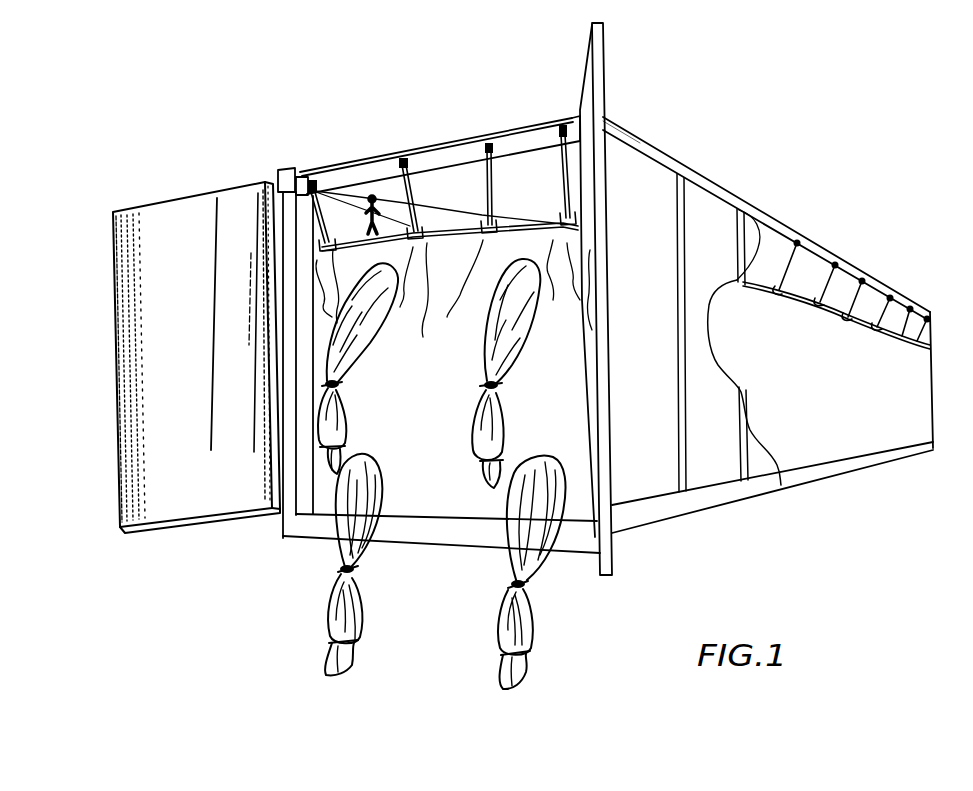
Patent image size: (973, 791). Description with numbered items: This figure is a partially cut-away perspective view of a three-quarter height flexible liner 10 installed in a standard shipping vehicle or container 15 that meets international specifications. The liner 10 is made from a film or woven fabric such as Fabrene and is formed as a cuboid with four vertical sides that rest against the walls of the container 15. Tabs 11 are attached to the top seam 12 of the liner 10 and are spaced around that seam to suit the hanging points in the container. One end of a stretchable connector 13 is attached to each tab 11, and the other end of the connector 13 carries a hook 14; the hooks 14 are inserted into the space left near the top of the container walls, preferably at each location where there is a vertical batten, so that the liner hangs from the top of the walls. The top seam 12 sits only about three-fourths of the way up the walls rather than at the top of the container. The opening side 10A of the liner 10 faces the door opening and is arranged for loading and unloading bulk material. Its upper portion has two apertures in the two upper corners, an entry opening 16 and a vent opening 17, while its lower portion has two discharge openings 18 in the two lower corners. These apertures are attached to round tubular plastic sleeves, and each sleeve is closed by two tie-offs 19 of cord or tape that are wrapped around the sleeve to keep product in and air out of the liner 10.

The flexible liner 10 is at (867, 435).
The opening side 10A is at (463, 512).
The tab 11 is at (333, 246).
The top seam 12 is at (436, 243).
The stretchable connector 13 is at (324, 217).
The hook 14 is at (378, 160).
The container 15 is at (645, 177).
The entry opening 16 is at (383, 328).
The vent opening 17 is at (485, 345).
The discharge opening 18 is at (383, 498).
The tie-off 19 is at (347, 387).